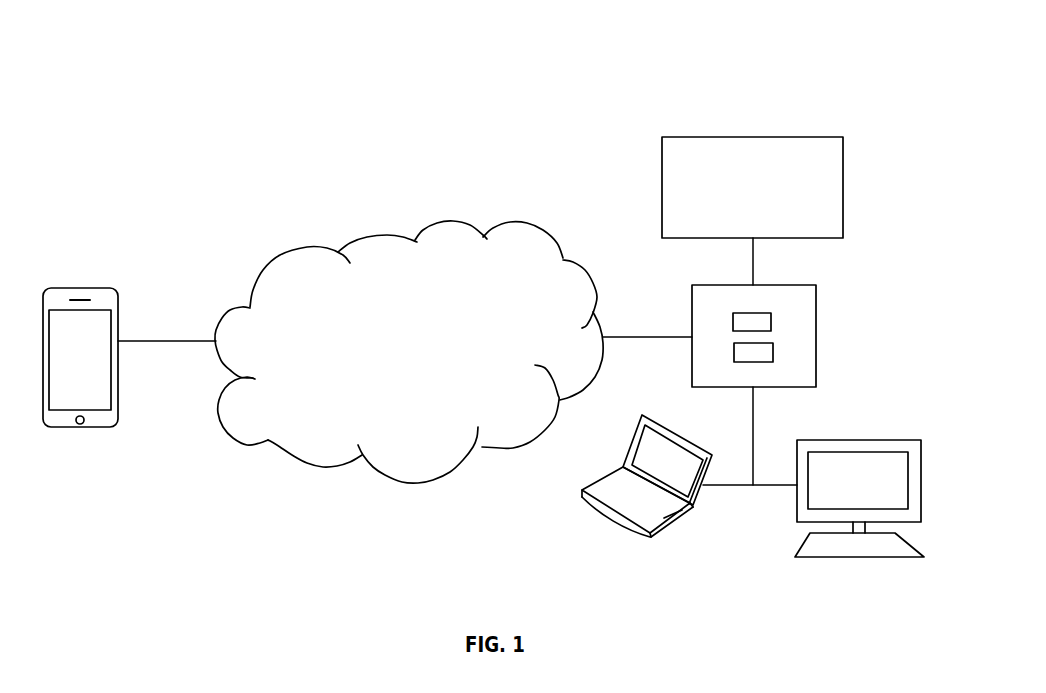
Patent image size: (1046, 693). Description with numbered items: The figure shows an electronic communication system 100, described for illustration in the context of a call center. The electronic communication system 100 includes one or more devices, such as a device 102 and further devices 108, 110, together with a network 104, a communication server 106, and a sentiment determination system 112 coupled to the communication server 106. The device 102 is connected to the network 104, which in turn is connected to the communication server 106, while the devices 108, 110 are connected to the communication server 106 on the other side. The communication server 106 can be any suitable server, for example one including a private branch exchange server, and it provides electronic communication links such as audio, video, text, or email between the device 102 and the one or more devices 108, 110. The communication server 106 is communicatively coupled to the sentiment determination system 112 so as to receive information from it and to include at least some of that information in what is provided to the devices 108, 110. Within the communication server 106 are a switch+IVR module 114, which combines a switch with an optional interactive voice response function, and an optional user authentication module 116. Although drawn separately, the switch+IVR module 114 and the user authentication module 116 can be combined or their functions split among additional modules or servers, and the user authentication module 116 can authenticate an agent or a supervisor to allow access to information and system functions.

The electronic communication system 100 is at (814, 58).
The device 102 is at (88, 430).
The network 104 is at (453, 221).
The communication server 106 is at (817, 297).
The device 108 is at (667, 528).
The device 110 is at (921, 467).
The sentiment determination system 112 is at (843, 185).
The switch+IVR module 114 is at (773, 353).
The user authentication module 116 is at (771, 322).